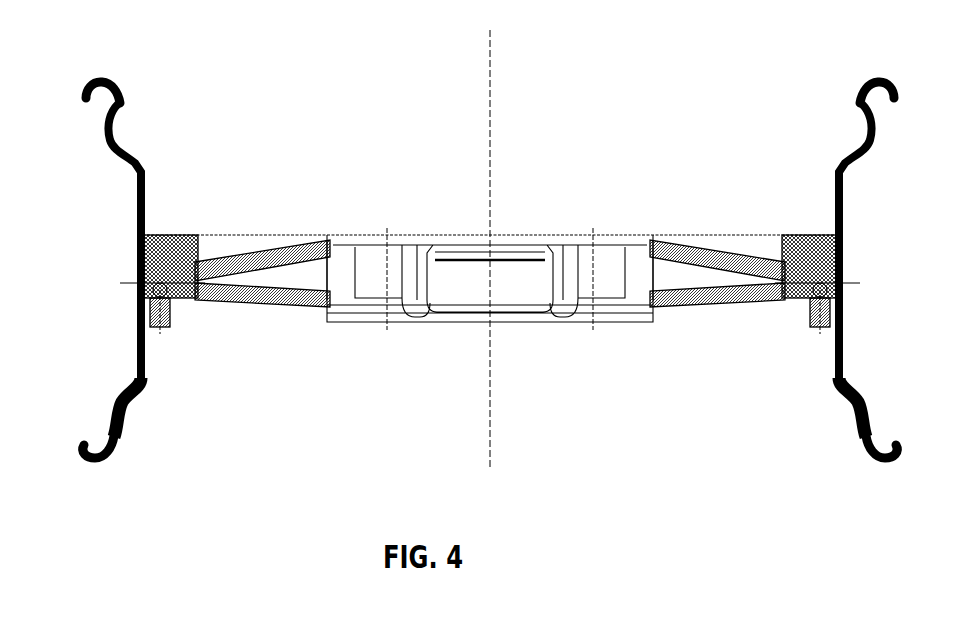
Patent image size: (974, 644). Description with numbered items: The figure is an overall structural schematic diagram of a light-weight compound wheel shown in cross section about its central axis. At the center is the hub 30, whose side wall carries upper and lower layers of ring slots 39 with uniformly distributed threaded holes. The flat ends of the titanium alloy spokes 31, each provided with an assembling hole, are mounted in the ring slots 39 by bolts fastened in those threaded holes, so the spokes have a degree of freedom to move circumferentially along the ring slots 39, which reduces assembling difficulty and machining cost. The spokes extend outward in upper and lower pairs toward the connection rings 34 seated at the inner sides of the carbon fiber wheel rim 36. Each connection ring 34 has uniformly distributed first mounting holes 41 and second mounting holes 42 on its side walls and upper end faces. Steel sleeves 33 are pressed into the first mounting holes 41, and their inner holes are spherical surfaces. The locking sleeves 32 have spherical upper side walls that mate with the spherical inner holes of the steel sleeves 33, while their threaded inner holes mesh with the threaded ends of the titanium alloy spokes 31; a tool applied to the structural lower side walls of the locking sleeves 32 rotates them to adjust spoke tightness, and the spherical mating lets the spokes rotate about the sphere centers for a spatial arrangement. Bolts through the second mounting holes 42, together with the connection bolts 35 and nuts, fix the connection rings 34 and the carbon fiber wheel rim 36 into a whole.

The hub 30 is at (416, 252).
The titanium alloy spoke 31 is at (259, 258).
The locking sleeve 32 is at (770, 263).
The steel sleeve 33 is at (792, 262).
The connection ring 34 is at (185, 233).
The connection bolt 35 is at (822, 250).
The carbon fiber wheel rim 36 is at (870, 131).
The ring slot 39 is at (332, 244).
The first mounting hole 41 is at (183, 283).
The second mounting hole 42 is at (163, 232).